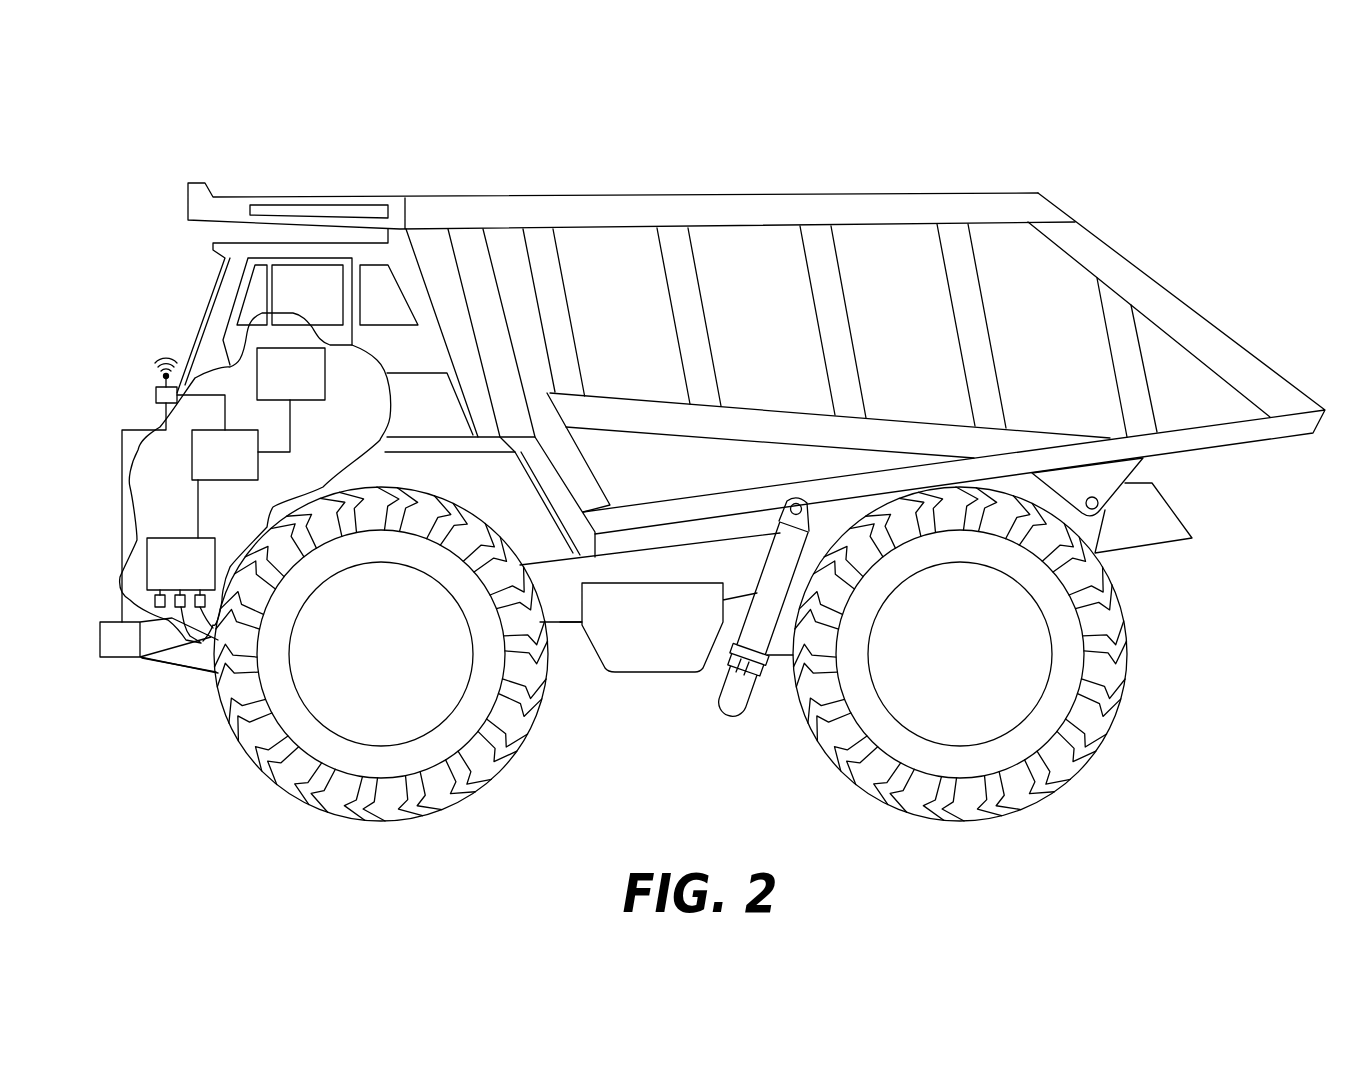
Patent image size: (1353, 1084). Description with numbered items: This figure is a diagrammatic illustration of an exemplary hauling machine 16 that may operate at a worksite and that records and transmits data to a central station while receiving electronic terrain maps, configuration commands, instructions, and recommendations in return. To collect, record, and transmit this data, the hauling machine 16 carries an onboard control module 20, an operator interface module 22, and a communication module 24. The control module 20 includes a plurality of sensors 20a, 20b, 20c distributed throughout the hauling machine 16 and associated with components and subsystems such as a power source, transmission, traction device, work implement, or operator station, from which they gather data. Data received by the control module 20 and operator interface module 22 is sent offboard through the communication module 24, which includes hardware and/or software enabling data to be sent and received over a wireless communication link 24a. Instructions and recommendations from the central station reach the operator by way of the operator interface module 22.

The hauling machine 16 is at (1243, 176).
The onboard control module 20 is at (167, 578).
The sensor 20a is at (155, 601).
The sensor 20b is at (180, 665).
The sensor 20c is at (213, 538).
The operator interface module 22 is at (277, 386).
The communication module 24 is at (211, 468).
The wireless communication link 24a is at (156, 398).